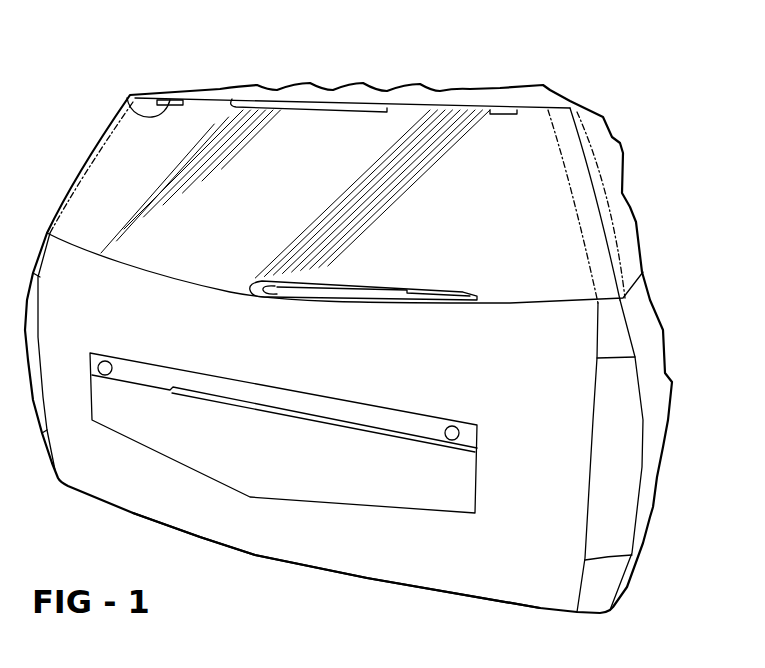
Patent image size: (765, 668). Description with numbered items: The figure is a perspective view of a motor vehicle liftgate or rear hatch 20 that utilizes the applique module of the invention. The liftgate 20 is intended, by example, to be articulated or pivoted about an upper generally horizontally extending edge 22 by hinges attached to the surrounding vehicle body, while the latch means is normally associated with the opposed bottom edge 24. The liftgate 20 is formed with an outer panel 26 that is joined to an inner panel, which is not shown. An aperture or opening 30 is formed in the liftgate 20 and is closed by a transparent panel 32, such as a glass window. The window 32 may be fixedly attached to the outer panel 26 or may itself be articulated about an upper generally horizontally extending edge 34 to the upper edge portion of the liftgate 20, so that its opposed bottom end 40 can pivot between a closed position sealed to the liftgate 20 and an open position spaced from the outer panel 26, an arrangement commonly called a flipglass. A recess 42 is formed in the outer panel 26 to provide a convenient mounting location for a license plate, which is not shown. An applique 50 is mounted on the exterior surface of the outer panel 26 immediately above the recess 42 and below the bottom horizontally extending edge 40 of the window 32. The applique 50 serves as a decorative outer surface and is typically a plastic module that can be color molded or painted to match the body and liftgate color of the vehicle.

The liftgate 20 is at (614, 94).
The upper generally horizontally extending edge 22 is at (128, 99).
The bottom edge 24 is at (367, 578).
The outer panel 26 is at (86, 473).
The aperture 30 is at (587, 233).
The transparent panel 32 is at (548, 167).
The upper generally horizontally extending edge 34 is at (216, 98).
The bottom end 40 is at (163, 277).
The recess 42 is at (306, 487).
The applique 50 is at (387, 444).